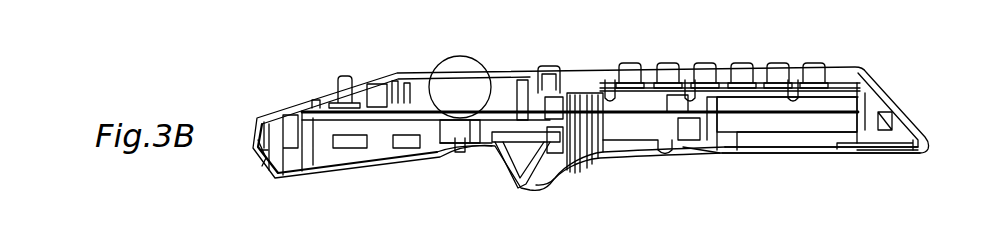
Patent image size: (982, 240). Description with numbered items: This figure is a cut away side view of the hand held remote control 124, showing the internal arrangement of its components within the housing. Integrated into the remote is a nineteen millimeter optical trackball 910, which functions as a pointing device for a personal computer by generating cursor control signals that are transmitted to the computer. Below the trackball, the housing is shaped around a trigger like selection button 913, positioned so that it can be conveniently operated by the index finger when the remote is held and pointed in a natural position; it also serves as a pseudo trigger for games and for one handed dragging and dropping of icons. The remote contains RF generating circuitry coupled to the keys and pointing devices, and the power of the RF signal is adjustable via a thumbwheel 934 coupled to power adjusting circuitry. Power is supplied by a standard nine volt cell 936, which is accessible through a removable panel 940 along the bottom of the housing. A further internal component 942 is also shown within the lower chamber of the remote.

The hand held remote control 124 is at (900, 57).
The optical trackball 910 is at (461, 56).
The trigger like selection button 913 is at (505, 167).
The thumbwheel 934 is at (404, 150).
The 9 volt cell 936 is at (847, 103).
The removable panel 940 is at (781, 155).
The electronic component 942 is at (343, 150).